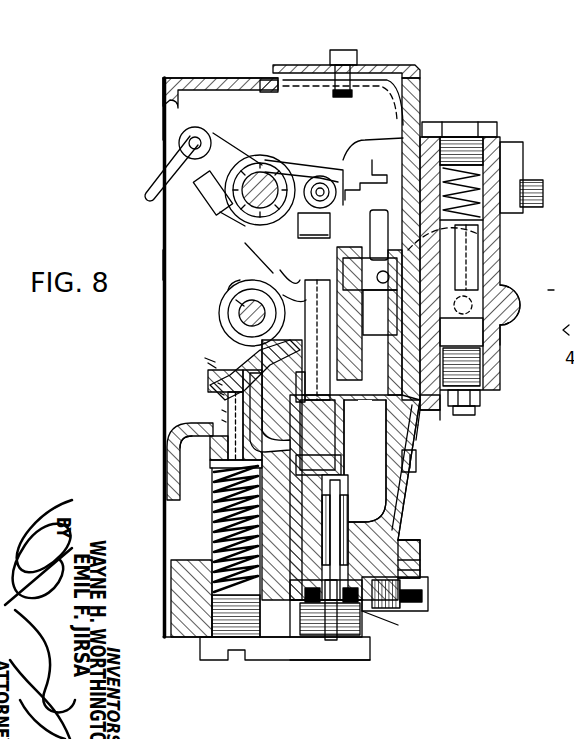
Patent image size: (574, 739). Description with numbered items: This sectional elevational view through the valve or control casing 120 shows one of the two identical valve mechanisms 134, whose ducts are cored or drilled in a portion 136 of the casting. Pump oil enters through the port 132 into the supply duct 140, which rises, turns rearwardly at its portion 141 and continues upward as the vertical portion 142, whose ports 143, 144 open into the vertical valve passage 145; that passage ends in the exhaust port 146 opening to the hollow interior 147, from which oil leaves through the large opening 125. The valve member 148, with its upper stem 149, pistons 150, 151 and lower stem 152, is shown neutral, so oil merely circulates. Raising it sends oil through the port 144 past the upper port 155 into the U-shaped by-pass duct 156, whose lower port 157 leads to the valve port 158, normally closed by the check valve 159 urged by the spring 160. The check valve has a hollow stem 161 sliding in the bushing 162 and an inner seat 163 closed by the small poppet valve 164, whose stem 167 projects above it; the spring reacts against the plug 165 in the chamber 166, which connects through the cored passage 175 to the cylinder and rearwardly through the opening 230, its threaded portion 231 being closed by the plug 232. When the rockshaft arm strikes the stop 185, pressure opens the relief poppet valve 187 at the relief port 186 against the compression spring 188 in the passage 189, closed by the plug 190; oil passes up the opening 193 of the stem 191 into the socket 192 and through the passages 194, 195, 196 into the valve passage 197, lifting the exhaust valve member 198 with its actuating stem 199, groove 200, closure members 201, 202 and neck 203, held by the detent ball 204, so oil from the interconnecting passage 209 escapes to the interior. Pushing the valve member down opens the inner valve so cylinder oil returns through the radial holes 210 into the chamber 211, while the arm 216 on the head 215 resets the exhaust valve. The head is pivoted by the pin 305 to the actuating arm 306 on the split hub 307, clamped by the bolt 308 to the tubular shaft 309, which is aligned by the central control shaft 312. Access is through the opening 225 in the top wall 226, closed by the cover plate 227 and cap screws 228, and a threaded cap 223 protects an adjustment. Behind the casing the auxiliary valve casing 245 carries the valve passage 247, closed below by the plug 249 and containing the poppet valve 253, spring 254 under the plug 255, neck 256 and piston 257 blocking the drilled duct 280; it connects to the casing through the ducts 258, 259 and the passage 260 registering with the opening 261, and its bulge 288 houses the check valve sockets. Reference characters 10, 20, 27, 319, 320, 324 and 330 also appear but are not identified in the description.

The fuel injection pump assembly 10 is at (458, 113).
The passage 20 is at (561, 291).
The fitting 27 is at (540, 184).
The valve or control casing 120 is at (452, 506).
The large opening 125 is at (163, 103).
The port 132 is at (178, 551).
The valve mechanism 134 is at (275, 298).
The portion of cast housing 136 is at (168, 434).
The supply duct 140 is at (195, 467).
The rearwardly extending portion of supply duct 141 is at (226, 428).
The second vertical portion of supply duct 142 is at (230, 365).
The upper rearwardly facing port 143 is at (240, 333).
The lower port 144 is at (298, 381).
The vertical valve passage 145 is at (244, 381).
The exhaust port 146 is at (248, 314).
The hollow interior of valve casing 147 is at (196, 268).
The valve member 148 is at (285, 267).
The upper stem portion 149 is at (300, 290).
The upper piston or closure portion 150 is at (265, 352).
The lower piston 151 is at (356, 466).
The lower stem portion 152 is at (319, 392).
The upper port of by-pass duct 155 is at (330, 440).
The U-shaped by-pass duct 156 is at (408, 483).
The lower port of by-pass duct 157 is at (412, 548).
The valve port 158 is at (410, 566).
The check valve 159 is at (298, 640).
The spring 160 is at (340, 640).
The hollow stem 161 is at (345, 508).
The bushing 162 is at (347, 526).
The valve seat 163 is at (312, 640).
The small poppet valve 164 is at (325, 640).
The plug 165 is at (365, 660).
The chamber 166 is at (362, 650).
The stem of inner valve 167 is at (405, 500).
The cored passage 175 is at (265, 595).
The stop 185 is at (205, 358).
The relief port 186 is at (180, 450).
The relief poppet valve 187 is at (230, 466).
The compression spring 188 is at (243, 504).
The passage 189 is at (245, 530).
The plug 190 is at (210, 648).
The stem 191 is at (222, 420).
The socket 192 is at (220, 393).
The axially extending opening 193 is at (222, 410).
The transverse passage 194 is at (218, 383).
The fore and aft extending passage 195 is at (208, 363).
The second transverse passage 196 is at (412, 462).
The valve passage 197 is at (447, 395).
The exhaust valve member 198 is at (375, 257).
The upper actuating stem 199 is at (370, 245).
The groove 200 is at (335, 278).
The upper closure member 201 is at (268, 250).
The lower closure member 202 is at (466, 438).
The neck 203 is at (478, 428).
The detent ball 204 is at (378, 213).
The short interconnecting passage 209 is at (320, 340).
The radially extending holes 210 is at (436, 553).
The chamber 211 is at (318, 437).
The head 215 is at (314, 225).
The laterally extending arm 216 is at (376, 173).
The threaded cap 223 is at (418, 474).
The opening 225 is at (287, 92).
The top wall 226 is at (213, 80).
The cover plate 227 is at (372, 65).
The cap screw 228 is at (342, 50).
The opening 230 is at (386, 620).
The threaded portion 231 is at (412, 608).
The plug 232 is at (430, 590).
The auxiliary valve casing 245 is at (507, 135).
The valve passage 247 is at (490, 346).
The plug 249 is at (472, 405).
The poppet valve 253 is at (500, 228).
The compression spring 254 is at (522, 163).
The plug 255 is at (486, 124).
The neck portion 256 is at (505, 288).
The piston or closure portion 257 is at (478, 345).
The duct 258 is at (494, 380).
The duct 259 is at (478, 388).
The short forwardly extending passage 260 is at (500, 262).
The opening 261 is at (500, 242).
The transverse drilled duct 280 is at (473, 304).
The bulge 288 is at (508, 315).
The pin 305 is at (321, 177).
The actuating arm 306 is at (290, 167).
The split hub 307 is at (252, 160).
The clamping bolt 308 is at (200, 181).
The tubular shaft 309 is at (237, 160).
The central control shaft 312 is at (222, 228).
The pin 319 is at (232, 290).
The pin 320 is at (240, 303).
The link 324 is at (258, 251).
The pivot 330 is at (215, 142).